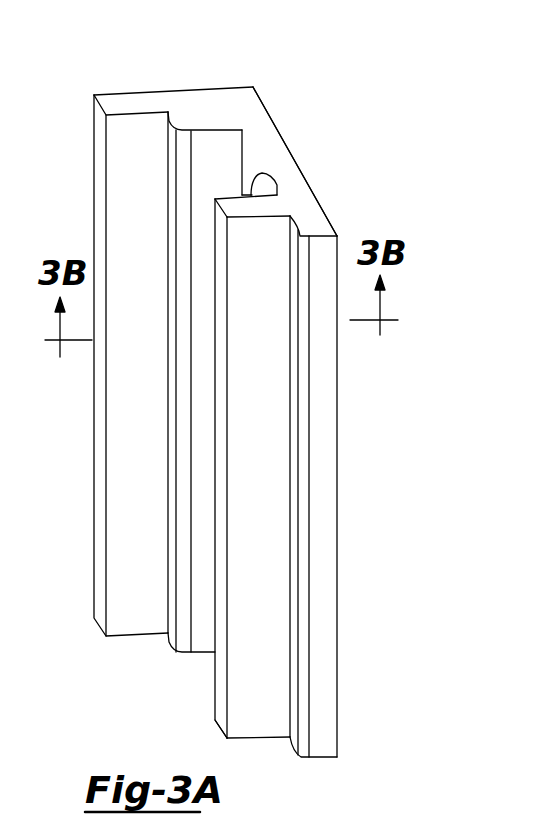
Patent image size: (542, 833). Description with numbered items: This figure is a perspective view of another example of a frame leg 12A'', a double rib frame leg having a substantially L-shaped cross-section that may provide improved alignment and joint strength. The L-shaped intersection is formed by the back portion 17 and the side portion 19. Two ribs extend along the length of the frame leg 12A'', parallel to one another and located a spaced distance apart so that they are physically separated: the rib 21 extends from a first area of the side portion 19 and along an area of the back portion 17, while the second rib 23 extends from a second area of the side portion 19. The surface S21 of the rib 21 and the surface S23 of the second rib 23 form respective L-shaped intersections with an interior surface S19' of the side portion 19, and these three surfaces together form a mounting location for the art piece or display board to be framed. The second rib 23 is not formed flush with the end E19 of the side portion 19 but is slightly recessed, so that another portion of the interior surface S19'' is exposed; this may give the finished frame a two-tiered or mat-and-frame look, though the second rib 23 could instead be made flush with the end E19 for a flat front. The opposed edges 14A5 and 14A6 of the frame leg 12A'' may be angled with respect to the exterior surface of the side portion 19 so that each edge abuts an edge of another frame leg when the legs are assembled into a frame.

The frame leg 12A'' is at (239, 50).
The back portion 17 is at (102, 135).
The side portion 19 is at (281, 144).
The rib 21 is at (183, 130).
The second rib 23 is at (217, 186).
The surface of rib S21 is at (208, 166).
The interior surface of side portion S19' is at (289, 146).
The exposed portion of interior surface S19'' is at (334, 476).
The surface of second rib S23 is at (256, 162).
The end of side portion E19 is at (325, 398).
The edge of frame leg 14A5 is at (255, 740).
The edge of frame leg 14A6 is at (288, 179).